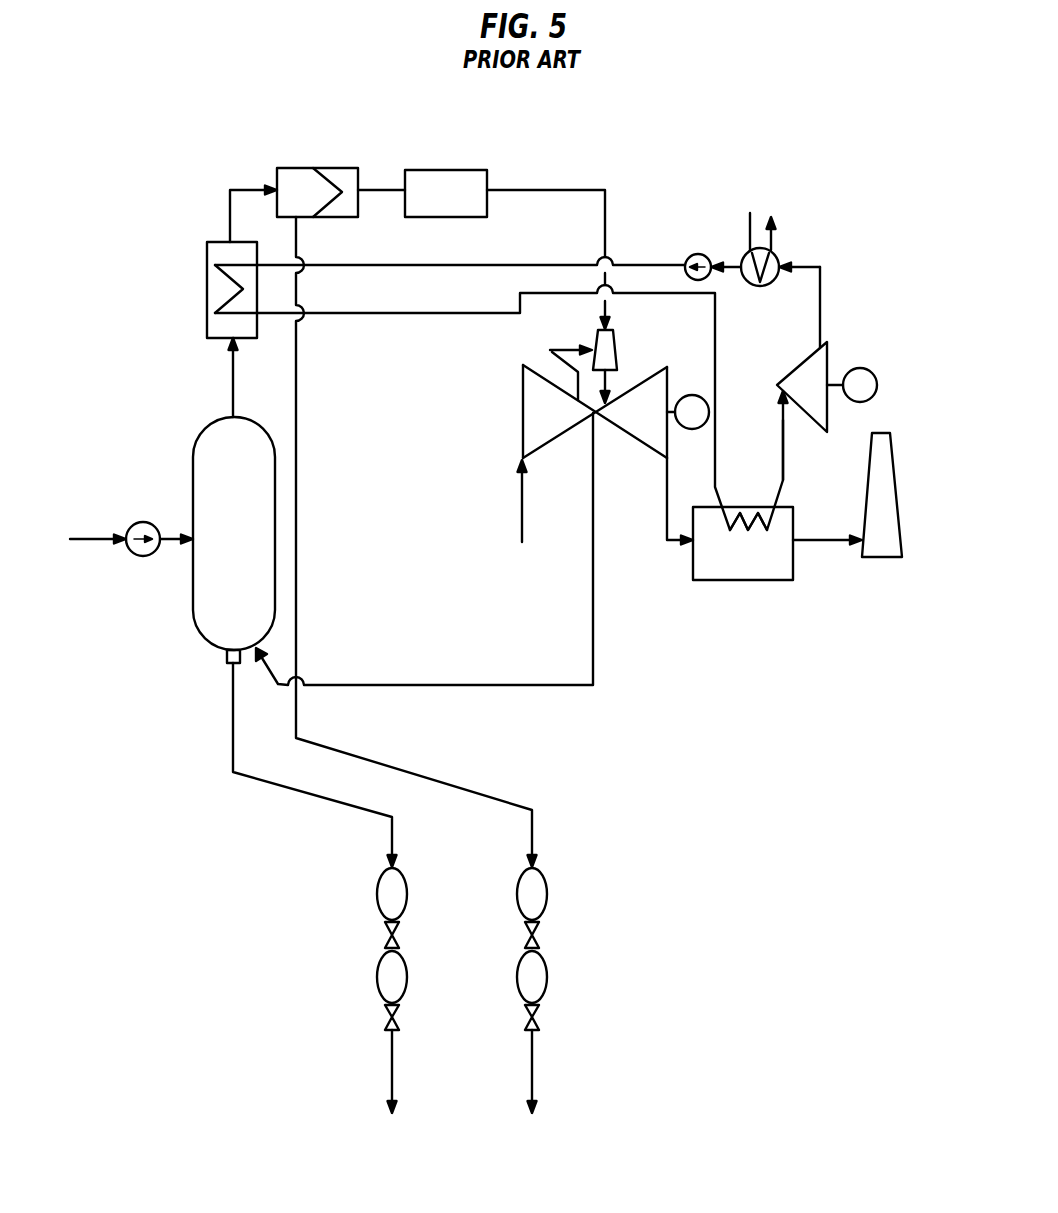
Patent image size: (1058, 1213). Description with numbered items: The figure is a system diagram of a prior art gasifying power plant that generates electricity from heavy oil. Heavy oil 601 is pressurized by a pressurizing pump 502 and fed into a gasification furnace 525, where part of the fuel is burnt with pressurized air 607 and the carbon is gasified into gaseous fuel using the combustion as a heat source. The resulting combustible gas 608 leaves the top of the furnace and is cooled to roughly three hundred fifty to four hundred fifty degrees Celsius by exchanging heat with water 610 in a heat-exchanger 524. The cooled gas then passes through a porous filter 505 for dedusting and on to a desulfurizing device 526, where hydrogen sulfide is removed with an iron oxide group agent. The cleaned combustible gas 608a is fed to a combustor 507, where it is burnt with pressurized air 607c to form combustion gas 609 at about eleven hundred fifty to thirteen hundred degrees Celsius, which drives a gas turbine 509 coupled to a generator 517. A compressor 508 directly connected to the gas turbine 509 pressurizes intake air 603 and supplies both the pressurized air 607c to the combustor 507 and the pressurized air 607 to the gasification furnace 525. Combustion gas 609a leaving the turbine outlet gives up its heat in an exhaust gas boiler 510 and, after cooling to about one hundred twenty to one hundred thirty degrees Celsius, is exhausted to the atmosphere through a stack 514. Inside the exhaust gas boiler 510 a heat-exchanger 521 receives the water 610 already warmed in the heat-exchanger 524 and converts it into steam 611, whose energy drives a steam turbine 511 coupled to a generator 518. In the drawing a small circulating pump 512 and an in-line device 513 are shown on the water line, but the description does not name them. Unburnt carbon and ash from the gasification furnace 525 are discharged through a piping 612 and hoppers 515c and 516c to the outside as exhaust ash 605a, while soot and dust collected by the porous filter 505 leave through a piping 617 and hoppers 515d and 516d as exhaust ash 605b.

The porous filter 505 is at (330, 166).
The desulfurizing device 526 is at (462, 170).
The combustible gas after dedusting and desulfurization 608a is at (605, 205).
The heat-exchanger 524 is at (222, 242).
The water 610 is at (423, 264).
The piping 617 is at (297, 382).
The combustible gas 608 is at (232, 390).
The gasification furnace 525 is at (192, 457).
The heavy oil 601 is at (98, 539).
The pressurizing pump 502 is at (129, 524).
The pressurized air 607 is at (593, 603).
The compressor 508 is at (521, 417).
The gas turbine 509 is at (623, 432).
The intake air 603 is at (547, 512).
The combustion gas at gas turbine outlet 609a is at (647, 540).
The generator 517 is at (686, 429).
The combustor 507 is at (614, 328).
The combustion gas 609 is at (606, 381).
The pressurized air 607c is at (550, 350).
The flow meter 513 is at (709, 257).
The circulating pump 512 is at (776, 257).
The steam turbine 511 is at (832, 354).
The generator 518 is at (872, 373).
The steam 611 is at (783, 452).
The heat-exchanger 521 is at (770, 520).
The exhaust gas boiler 510 is at (752, 582).
The stack 514 is at (912, 462).
The piping 612 is at (372, 818).
The hopper 515c is at (377, 896).
The hopper 515d is at (517, 896).
The hopper 516c is at (377, 979).
The hopper 516d is at (517, 979).
The exhaust ash 605a is at (392, 1065).
The exhaust ash 605b is at (532, 1065).